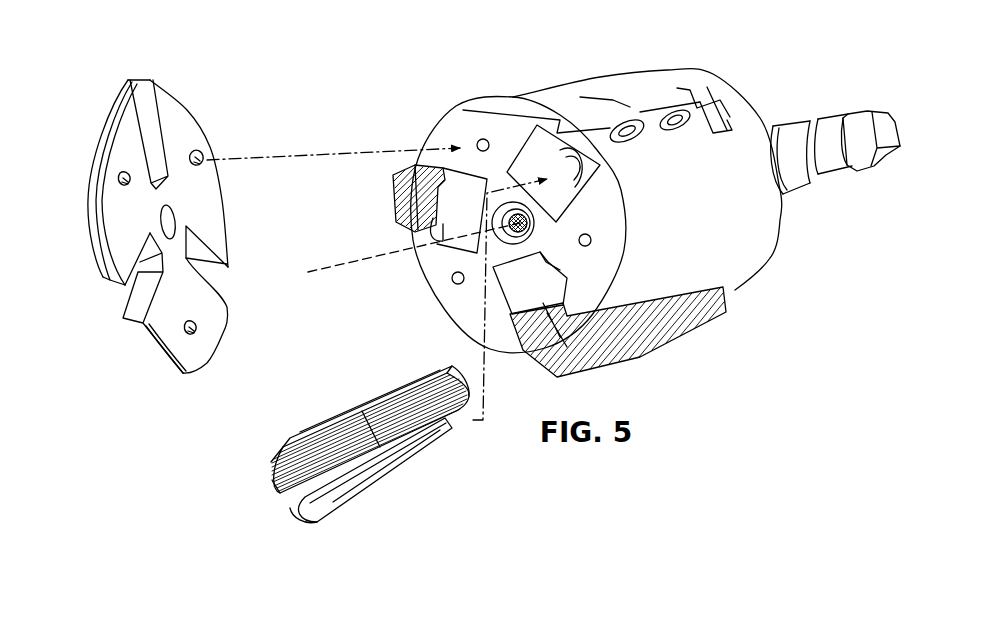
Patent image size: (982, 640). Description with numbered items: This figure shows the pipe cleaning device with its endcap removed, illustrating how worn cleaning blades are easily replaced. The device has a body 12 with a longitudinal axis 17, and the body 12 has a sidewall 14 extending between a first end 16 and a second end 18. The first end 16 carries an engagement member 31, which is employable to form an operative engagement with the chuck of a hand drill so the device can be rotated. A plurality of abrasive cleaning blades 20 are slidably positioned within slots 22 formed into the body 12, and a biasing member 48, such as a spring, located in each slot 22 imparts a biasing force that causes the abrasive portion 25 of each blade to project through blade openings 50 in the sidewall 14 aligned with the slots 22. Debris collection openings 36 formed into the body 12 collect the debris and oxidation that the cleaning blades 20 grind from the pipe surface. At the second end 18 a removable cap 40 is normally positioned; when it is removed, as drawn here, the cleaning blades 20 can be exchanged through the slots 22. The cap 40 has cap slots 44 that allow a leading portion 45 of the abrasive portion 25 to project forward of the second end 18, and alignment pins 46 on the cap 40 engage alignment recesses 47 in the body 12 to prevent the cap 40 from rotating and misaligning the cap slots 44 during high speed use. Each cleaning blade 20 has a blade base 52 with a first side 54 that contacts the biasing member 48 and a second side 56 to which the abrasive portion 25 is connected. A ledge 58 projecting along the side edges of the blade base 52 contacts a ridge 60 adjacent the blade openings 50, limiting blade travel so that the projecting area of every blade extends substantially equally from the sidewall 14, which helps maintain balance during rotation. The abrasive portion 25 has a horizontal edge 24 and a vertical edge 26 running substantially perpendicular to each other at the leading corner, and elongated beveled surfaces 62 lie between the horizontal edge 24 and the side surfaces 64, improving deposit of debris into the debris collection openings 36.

The body 12 is at (535, 100).
The sidewall 14 is at (758, 213).
The first end 16 is at (717, 80).
The longitudinal axis 17 is at (333, 266).
The second end 18 is at (462, 105).
The cleaning blade 20 is at (395, 212).
The slot 22 is at (515, 278).
The horizontal edge 24 is at (368, 413).
The abrasive portion 25 is at (327, 433).
The vertical edge 26 is at (280, 495).
The engagement member 31 is at (823, 123).
The debris collection opening 36 is at (690, 88).
The removable cap 40 is at (150, 79).
The cap slot 44 is at (148, 112).
The leading portion 45 is at (302, 507).
The alignment pin 46 is at (198, 155).
The alignment recess 47 is at (477, 143).
The biasing member 48 is at (613, 198).
The blade opening 50 is at (613, 105).
The blade base 52 is at (275, 460).
The first side 54 is at (415, 460).
The second side 56 is at (420, 443).
The ledge 58 is at (333, 502).
The ridge 60 is at (538, 133).
The beveled surface 62 is at (445, 385).
The side surface 64 is at (450, 424).